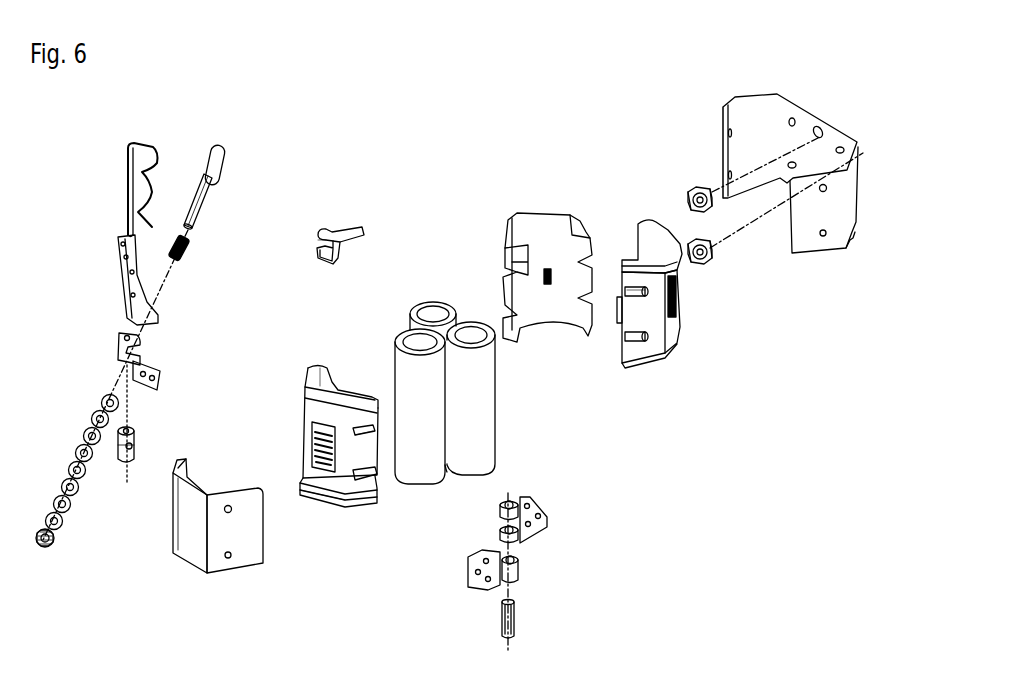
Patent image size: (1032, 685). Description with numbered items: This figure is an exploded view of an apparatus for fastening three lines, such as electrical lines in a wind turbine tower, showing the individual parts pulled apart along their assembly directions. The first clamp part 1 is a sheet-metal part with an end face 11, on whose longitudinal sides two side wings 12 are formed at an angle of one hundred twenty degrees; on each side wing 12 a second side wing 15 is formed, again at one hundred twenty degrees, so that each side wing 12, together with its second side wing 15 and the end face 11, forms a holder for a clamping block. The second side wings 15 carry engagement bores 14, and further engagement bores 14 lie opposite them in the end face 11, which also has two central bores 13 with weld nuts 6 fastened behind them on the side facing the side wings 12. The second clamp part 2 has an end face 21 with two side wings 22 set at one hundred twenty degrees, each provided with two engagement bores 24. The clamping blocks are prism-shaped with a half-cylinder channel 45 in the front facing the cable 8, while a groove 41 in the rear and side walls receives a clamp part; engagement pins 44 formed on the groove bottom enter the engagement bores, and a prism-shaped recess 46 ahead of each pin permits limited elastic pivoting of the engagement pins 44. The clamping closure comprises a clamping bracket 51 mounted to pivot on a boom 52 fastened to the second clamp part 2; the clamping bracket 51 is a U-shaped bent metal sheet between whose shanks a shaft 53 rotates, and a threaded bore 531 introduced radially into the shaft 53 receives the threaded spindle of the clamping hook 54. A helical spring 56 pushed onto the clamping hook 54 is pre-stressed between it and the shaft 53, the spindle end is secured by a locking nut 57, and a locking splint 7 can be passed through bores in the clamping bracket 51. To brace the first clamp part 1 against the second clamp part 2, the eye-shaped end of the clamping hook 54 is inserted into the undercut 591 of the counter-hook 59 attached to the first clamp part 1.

The first clamp part 1 is at (791, 182).
The second clamp part 2 is at (170, 587).
The weld nuts 6 is at (710, 263).
The locking splint 7 is at (128, 157).
The cable 8 is at (421, 297).
The end face 11 is at (837, 140).
The side wings 12 is at (758, 107).
The bores 13 is at (821, 128).
The engagement bores 14 is at (797, 113).
The second side wing 15 is at (728, 110).
The end face 21 is at (177, 541).
The side wings 22 is at (253, 560).
The engagement bores 24 is at (231, 505).
The groove 41 is at (317, 413).
The engagement pins 44 is at (363, 480).
The channel 45 is at (338, 392).
The recess 46 is at (373, 473).
The clamping bracket 51 is at (120, 281).
The boom 52 is at (157, 363).
The shaft 53 is at (135, 443).
The clamping hook 54 is at (210, 153).
The helical spring 56 is at (188, 253).
The locking nut 57 is at (43, 548).
The counter-hook 59 is at (355, 229).
The threaded bore 531 is at (115, 463).
The undercut 591 is at (332, 230).